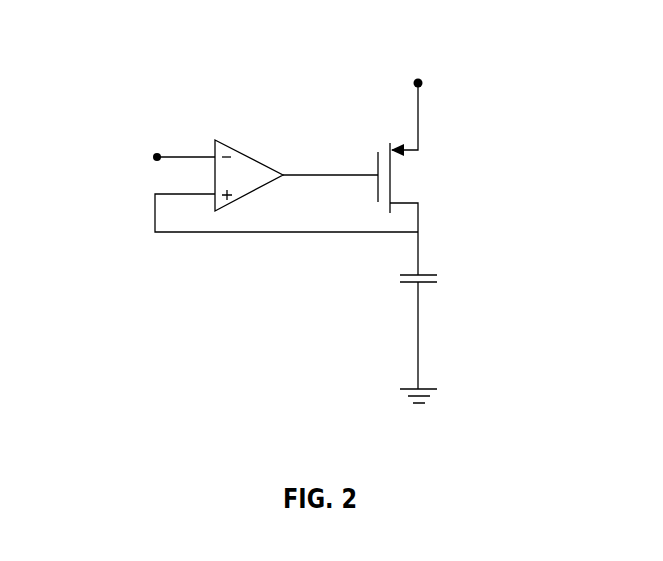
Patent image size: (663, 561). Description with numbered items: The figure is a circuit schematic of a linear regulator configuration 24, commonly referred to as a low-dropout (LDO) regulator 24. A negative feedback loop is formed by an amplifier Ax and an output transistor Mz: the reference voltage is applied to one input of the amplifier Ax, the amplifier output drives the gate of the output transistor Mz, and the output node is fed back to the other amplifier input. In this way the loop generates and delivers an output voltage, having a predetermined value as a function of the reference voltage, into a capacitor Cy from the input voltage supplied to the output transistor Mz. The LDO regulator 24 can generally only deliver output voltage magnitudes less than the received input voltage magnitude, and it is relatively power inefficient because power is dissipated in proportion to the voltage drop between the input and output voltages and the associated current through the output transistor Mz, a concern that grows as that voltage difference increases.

The linear regulator configuration 24 is at (113, 50).
The amplifier Ax is at (249, 175).
The output transistor Mz is at (415, 157).
The capacitor Cy is at (399, 310).